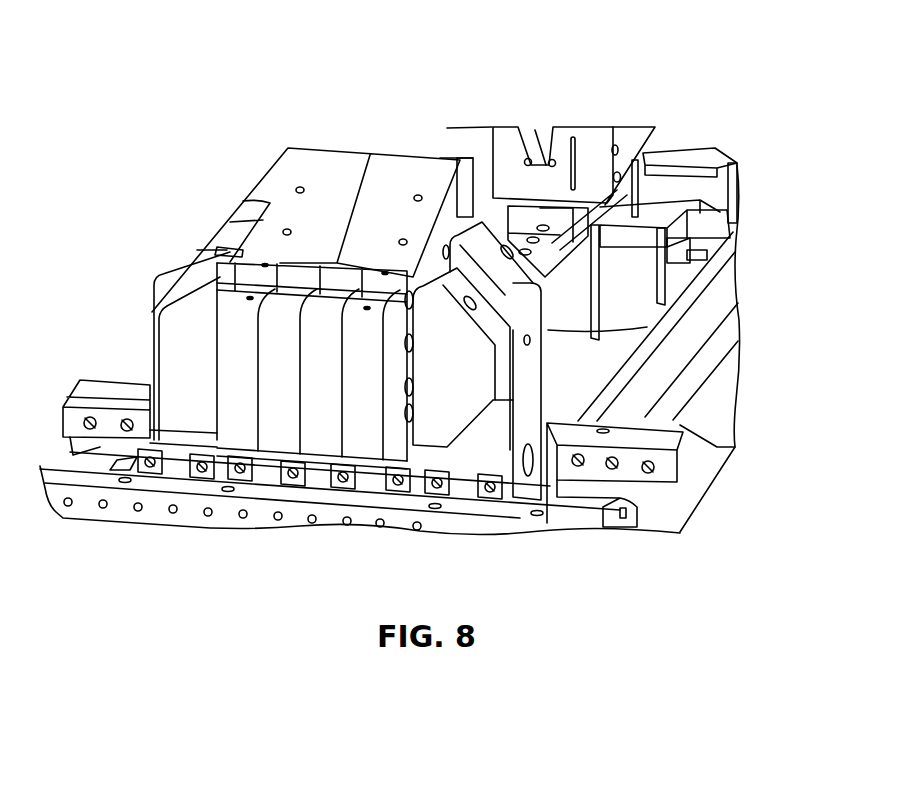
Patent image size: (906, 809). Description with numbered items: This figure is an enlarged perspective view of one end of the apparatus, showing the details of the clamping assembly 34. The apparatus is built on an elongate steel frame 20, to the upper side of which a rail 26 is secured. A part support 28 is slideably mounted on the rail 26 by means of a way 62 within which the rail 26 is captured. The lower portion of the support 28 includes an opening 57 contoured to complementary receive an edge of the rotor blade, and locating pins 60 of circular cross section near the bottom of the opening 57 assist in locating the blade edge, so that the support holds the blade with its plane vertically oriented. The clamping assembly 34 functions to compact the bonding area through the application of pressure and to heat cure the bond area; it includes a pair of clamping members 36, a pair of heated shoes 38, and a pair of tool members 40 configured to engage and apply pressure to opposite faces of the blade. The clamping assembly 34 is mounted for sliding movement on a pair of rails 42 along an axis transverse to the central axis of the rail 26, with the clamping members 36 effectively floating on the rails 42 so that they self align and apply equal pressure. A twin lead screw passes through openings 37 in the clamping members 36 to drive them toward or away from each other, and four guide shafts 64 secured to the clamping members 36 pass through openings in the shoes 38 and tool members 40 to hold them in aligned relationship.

The frame 20 is at (687, 317).
The rail 26 is at (553, 245).
The part support 28 is at (568, 223).
The clamping assembly 34 is at (205, 160).
The clamping members 36 is at (190, 298).
The openings 37 is at (458, 372).
The heated shoes 38 is at (233, 385).
The tool members 40 is at (268, 366).
The rails 42 is at (683, 432).
The opening 57 is at (544, 128).
The locating pins 60 is at (529, 158).
The way 62 is at (567, 225).
The guide shafts 64 is at (403, 415).